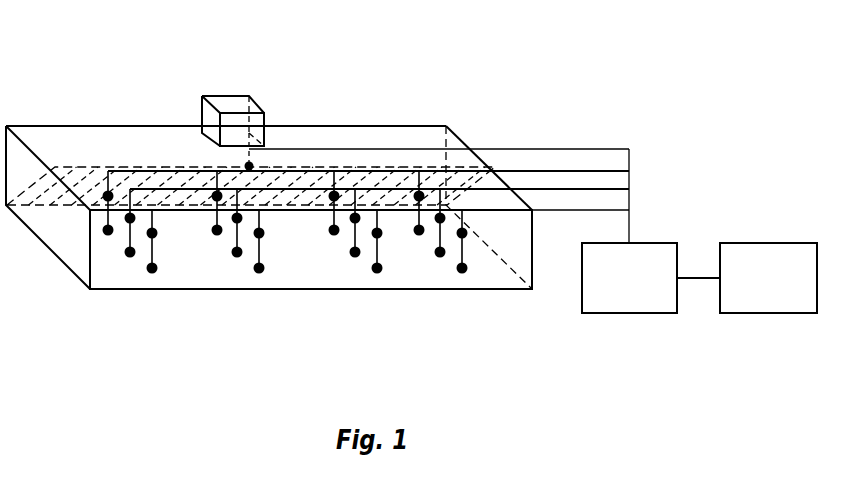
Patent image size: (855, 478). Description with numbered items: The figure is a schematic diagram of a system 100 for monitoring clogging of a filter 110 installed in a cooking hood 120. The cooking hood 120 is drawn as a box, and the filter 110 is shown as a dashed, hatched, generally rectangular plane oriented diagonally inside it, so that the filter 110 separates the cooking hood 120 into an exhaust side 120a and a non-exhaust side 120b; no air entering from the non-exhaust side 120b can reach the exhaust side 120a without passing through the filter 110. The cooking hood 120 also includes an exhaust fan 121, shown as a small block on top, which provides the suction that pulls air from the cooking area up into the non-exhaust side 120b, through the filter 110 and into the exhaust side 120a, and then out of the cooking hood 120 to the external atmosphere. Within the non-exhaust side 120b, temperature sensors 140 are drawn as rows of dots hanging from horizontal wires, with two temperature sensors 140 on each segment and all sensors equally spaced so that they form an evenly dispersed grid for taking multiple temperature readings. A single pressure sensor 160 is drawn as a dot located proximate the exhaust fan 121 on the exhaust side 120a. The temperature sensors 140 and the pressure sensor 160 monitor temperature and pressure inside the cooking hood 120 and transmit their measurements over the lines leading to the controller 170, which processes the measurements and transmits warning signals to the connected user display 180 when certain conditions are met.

The system 100 is at (411, 199).
The filter 110 is at (55, 195).
The cooking hood 120 is at (269, 207).
The exhaust side 120a is at (97, 143).
The non-exhaust side 120b is at (297, 265).
The exhaust fan 121 is at (232, 95).
The temperature sensors 140 is at (462, 270).
The pressure sensor 160 is at (252, 165).
The controller 170 is at (629, 278).
The user display 180 is at (768, 278).